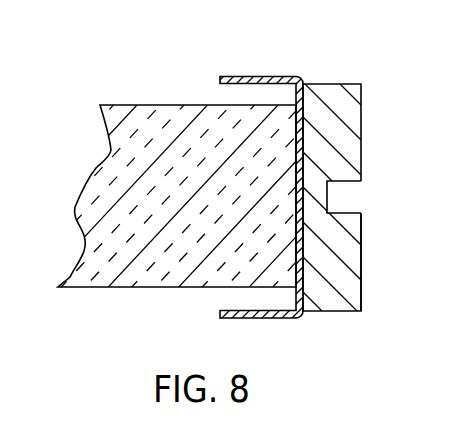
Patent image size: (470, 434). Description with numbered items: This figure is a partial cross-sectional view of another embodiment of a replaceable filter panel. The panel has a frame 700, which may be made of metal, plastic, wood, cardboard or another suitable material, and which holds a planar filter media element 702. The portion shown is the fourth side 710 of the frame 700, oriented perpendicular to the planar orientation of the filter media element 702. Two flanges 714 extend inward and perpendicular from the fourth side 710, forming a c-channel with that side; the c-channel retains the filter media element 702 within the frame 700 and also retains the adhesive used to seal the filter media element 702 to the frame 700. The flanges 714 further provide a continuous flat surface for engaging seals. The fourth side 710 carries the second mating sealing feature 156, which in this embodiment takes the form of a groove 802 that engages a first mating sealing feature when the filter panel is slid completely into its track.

The frame 700 is at (235, 191).
The flanges 714 is at (243, 76).
The fourth side 710 is at (361, 175).
The second mating sealing feature 156 is at (352, 196).
The groove 802 is at (362, 231).
The filter media element 702 is at (186, 288).